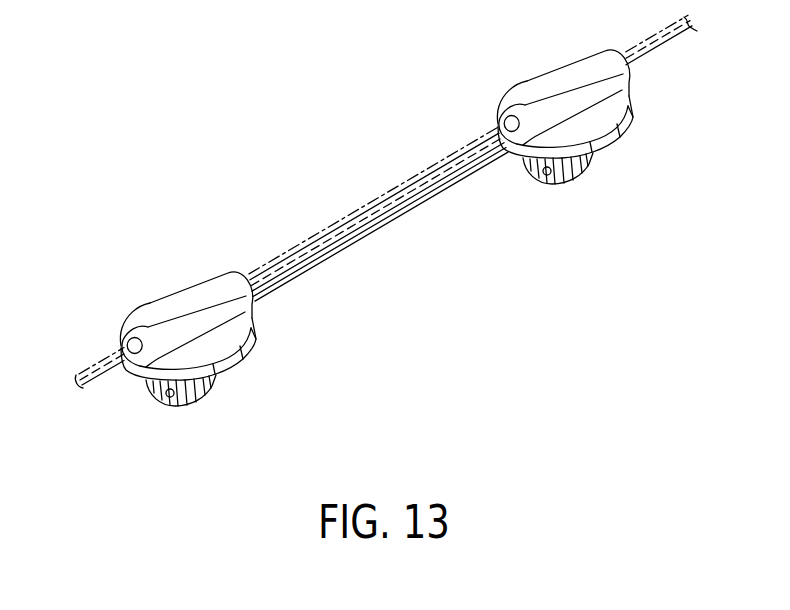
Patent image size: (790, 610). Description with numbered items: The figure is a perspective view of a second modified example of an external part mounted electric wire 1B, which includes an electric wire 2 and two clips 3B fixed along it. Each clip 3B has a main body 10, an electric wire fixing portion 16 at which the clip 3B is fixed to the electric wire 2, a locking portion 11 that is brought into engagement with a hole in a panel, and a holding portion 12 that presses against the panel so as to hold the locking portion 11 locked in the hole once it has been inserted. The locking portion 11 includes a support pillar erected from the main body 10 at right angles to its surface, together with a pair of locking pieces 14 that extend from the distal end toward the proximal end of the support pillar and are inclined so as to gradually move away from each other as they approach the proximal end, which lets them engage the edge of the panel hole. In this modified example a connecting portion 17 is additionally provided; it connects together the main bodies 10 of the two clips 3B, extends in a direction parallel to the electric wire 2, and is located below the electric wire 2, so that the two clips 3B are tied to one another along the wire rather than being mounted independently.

The electric wire 2 is at (392, 184).
The connecting portion 17 is at (378, 228).
The main body 10 is at (142, 316).
The electric wire fixing portion 16 is at (206, 291).
The holding portion 12 is at (245, 352).
The locking portion 11 is at (188, 408).
The locking pieces 14 is at (158, 398).
The external part mounted electric wire 1B is at (282, 160).
The clip 3B is at (237, 410).